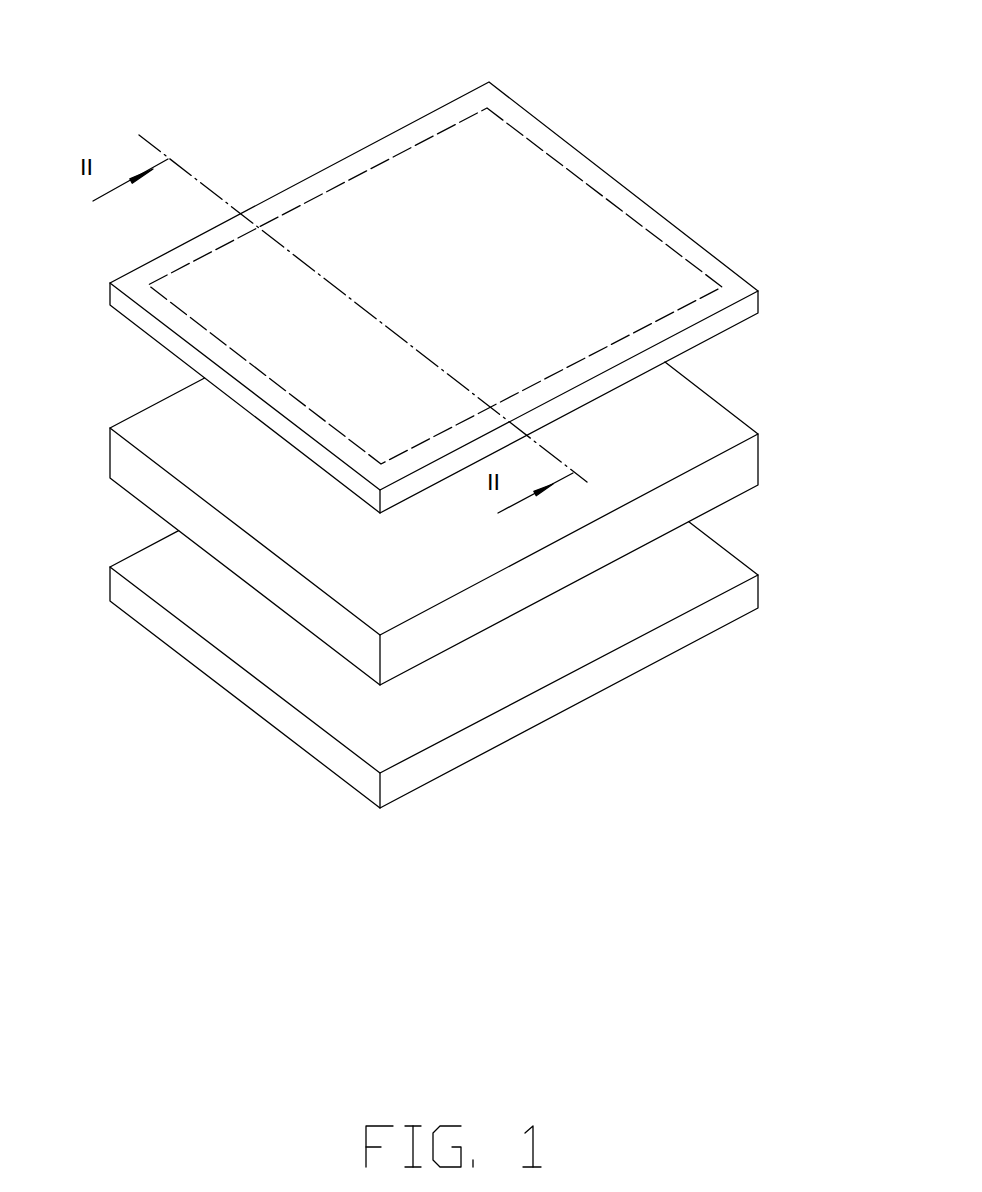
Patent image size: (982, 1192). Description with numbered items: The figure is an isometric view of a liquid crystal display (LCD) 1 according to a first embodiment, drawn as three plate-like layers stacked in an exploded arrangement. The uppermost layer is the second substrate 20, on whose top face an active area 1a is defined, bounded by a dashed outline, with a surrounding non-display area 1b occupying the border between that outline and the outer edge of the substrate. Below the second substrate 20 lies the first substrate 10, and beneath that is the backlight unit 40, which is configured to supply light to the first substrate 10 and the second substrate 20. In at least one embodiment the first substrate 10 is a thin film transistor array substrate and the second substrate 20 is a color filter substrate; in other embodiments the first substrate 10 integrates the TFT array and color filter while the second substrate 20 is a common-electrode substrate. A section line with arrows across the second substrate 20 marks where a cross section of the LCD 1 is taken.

The liquid crystal display 1 is at (467, 405).
The active area 1a is at (445, 163).
The non-display area 1b is at (560, 147).
The second substrate 20 is at (462, 258).
The first substrate 10 is at (713, 483).
The backlight unit 40 is at (678, 637).